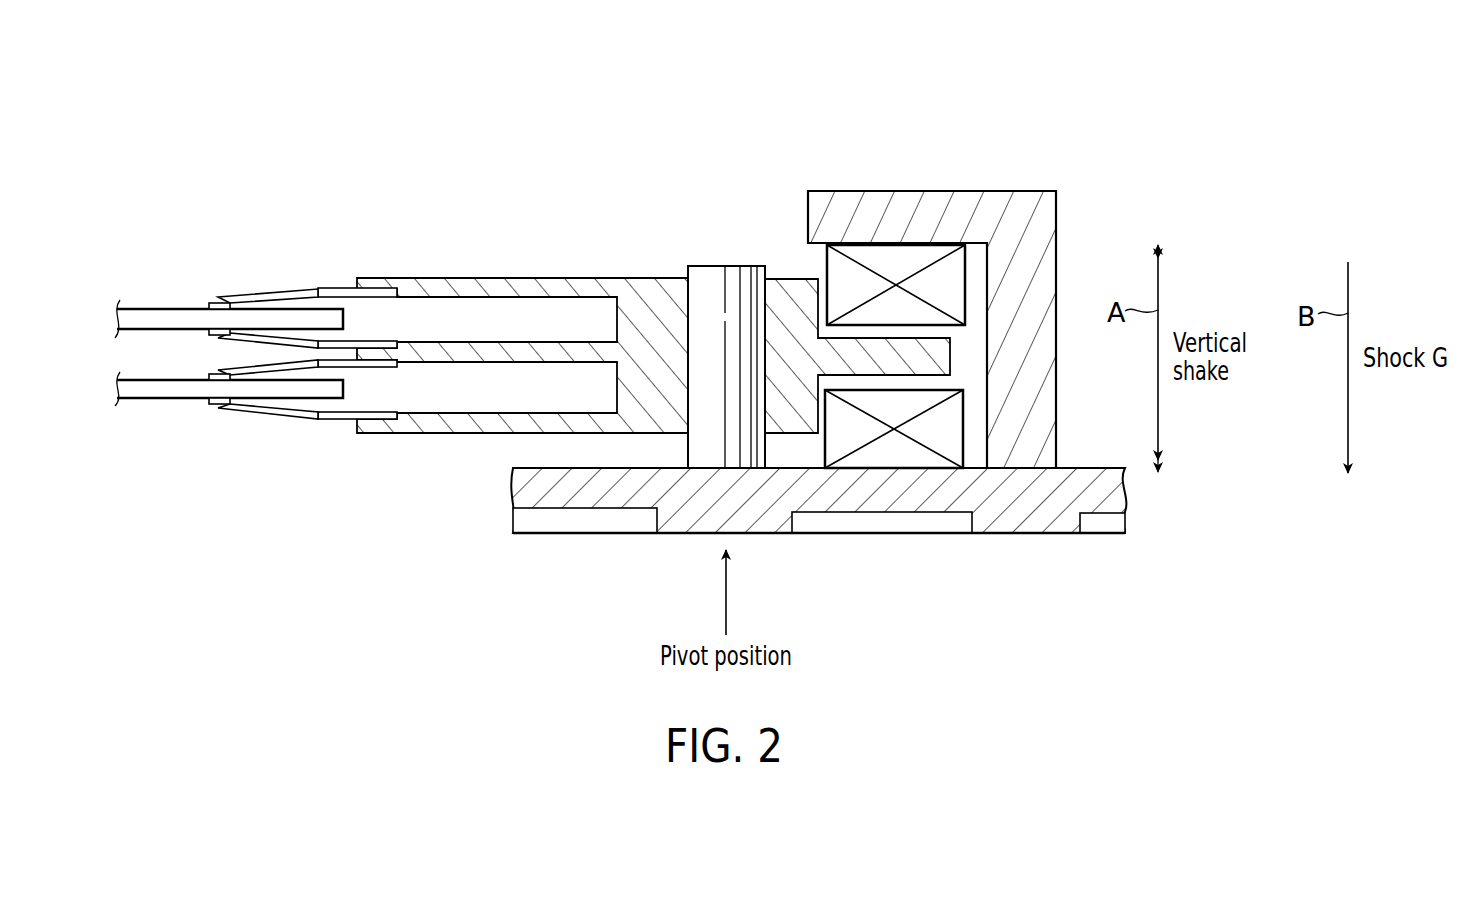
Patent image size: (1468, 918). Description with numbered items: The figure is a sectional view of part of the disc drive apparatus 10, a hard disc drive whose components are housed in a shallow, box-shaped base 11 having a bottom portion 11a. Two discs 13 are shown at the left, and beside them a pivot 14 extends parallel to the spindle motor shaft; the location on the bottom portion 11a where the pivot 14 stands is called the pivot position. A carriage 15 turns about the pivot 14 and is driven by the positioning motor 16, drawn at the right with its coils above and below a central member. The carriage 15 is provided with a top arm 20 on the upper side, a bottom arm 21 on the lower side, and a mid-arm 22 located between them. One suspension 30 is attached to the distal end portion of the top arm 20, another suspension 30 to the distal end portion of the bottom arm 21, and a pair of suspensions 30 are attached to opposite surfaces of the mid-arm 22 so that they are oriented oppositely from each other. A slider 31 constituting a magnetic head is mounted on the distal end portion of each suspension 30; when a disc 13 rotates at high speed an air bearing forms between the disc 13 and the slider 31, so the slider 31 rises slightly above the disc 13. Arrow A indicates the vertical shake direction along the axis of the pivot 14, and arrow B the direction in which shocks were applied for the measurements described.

The disc drive apparatus 10 is at (866, 137).
The base 11 is at (1016, 535).
The bottom portion 11a is at (678, 513).
The disc 13 is at (142, 309).
The pivot 14 is at (718, 283).
The carriage 15 is at (543, 266).
The positioning motor 16 is at (900, 455).
The top arm 20 is at (431, 278).
The bottom arm 21 is at (431, 433).
The mid-arm 22 is at (510, 344).
The suspension 30 is at (283, 297).
The slider 31 is at (209, 303).